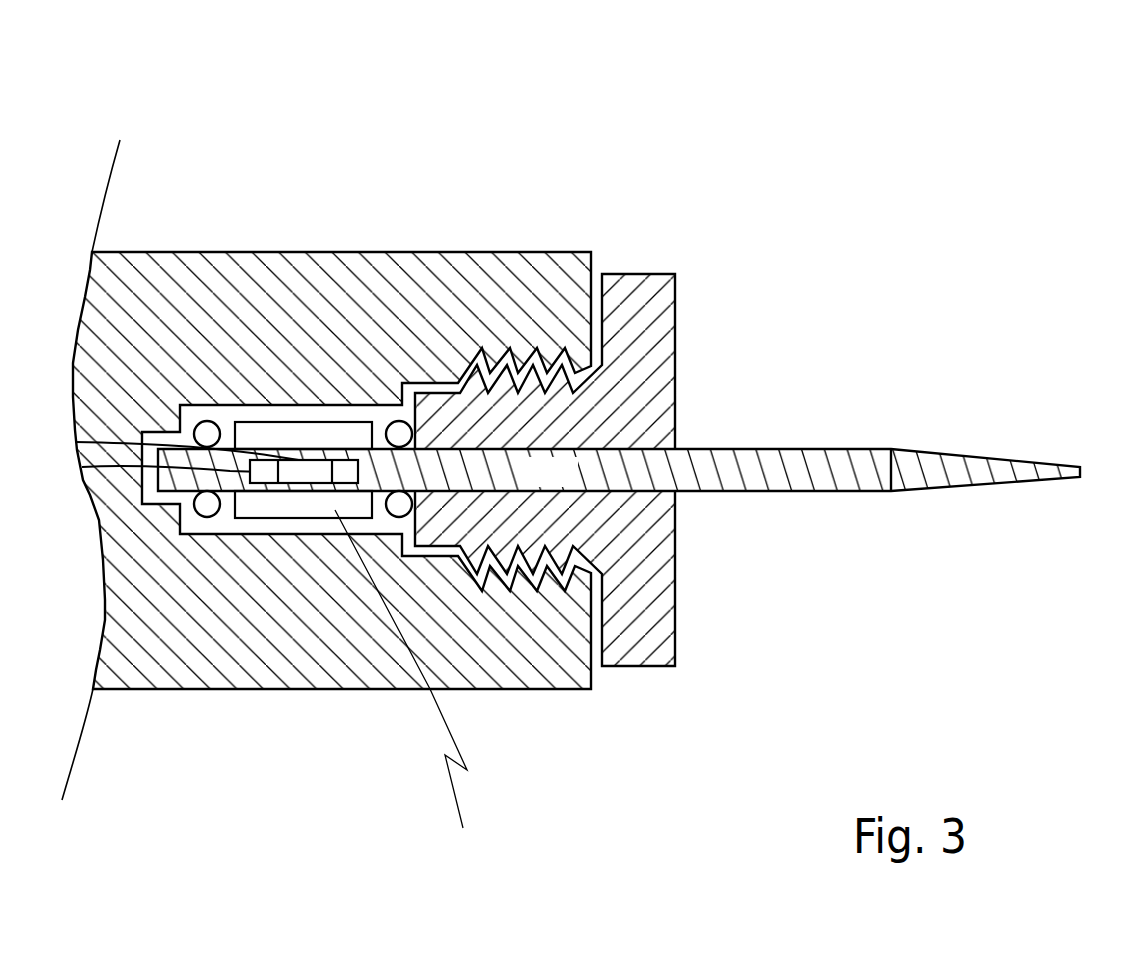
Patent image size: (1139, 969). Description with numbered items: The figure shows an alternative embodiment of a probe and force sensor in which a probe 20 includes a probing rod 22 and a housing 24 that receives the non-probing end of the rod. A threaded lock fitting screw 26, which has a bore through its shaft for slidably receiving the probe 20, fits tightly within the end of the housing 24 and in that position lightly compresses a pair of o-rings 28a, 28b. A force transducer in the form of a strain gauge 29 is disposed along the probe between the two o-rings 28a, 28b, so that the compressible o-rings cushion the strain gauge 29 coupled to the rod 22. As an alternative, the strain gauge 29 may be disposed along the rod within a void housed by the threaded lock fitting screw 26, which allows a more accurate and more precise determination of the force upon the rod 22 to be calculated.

The probe 20 is at (592, 444).
The probing rod 22 is at (598, 412).
The housing 24 is at (326, 407).
The threaded lock fitting screw 26 is at (666, 419).
The o-ring 28a is at (438, 271).
The o-ring 28b is at (483, 306).
The strain gauge 29 is at (233, 667).